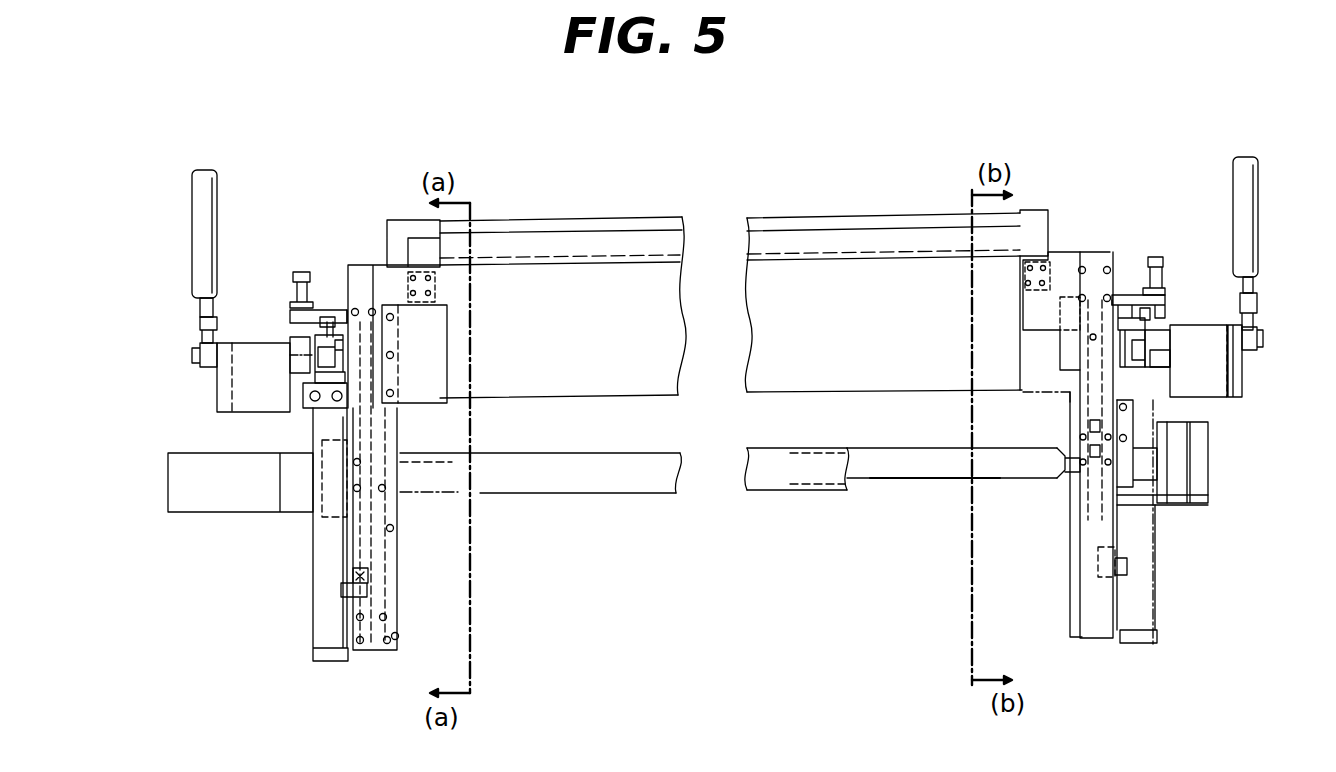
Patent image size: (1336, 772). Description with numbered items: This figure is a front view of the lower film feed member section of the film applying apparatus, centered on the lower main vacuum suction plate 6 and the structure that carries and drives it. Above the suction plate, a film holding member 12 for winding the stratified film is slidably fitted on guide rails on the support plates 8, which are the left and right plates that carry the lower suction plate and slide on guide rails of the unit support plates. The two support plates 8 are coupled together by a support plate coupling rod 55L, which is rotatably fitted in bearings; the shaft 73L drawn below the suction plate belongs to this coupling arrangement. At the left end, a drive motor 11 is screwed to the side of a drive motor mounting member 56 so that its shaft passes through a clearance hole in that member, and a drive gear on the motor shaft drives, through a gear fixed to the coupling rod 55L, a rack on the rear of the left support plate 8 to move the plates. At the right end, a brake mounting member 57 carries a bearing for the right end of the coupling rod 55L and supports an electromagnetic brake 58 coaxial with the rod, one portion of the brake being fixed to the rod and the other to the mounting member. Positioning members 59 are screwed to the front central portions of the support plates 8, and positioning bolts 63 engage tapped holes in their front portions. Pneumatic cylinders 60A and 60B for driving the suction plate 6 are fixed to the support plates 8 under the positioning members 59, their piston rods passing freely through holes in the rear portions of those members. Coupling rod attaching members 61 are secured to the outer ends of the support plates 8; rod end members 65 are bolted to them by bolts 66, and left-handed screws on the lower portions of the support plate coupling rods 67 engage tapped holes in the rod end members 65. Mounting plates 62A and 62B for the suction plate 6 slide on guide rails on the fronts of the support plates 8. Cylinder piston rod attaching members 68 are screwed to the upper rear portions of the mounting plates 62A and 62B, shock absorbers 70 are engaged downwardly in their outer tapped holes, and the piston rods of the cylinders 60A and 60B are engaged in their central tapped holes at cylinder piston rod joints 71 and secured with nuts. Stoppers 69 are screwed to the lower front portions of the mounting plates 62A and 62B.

The main vacuum suction plate 6 is at (765, 342).
The film holding member 12 is at (603, 230).
The sleeve shaft 73L is at (753, 473).
The support plate coupling rod 55L is at (903, 470).
The drive motor 11 is at (180, 473).
The pneumatic cylinder 60A is at (333, 655).
The pneumatic cylinder 60B is at (1155, 635).
The mounting plate 62A is at (390, 583).
The mounting plate 62B is at (1097, 607).
The stopper 69 is at (343, 590).
The support plate 8 is at (375, 267).
The positioning bolt 63 is at (345, 357).
The coupling rod attaching member 61 is at (223, 400).
The positioning member 59 is at (288, 377).
The cylinder piston rod joint 71 is at (293, 333).
The shock absorber 70 is at (297, 272).
The cylinder piston rod attaching member 68 is at (320, 307).
The support plate coupling rod 67 is at (208, 218).
The rod end member 65 is at (202, 318).
The drive motor mounting member 56 is at (193, 353).
The bolt 66 is at (1263, 340).
The brake mounting member 57 is at (1202, 442).
The electromagnetic brake 58 is at (1178, 483).